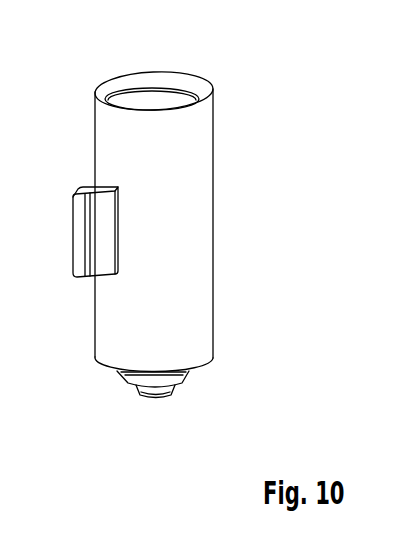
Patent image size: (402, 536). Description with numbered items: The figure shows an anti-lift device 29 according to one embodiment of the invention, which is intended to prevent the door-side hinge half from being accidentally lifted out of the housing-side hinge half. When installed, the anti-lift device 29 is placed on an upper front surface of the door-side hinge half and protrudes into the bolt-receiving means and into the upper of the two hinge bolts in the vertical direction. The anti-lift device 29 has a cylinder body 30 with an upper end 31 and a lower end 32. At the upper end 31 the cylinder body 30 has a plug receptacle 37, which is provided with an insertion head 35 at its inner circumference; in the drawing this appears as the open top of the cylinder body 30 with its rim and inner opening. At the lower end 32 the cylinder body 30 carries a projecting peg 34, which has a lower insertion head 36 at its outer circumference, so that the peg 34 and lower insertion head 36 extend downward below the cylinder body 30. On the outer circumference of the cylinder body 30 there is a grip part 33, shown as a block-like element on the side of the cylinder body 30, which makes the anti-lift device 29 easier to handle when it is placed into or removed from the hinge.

The anti-lift device 29 is at (161, 238).
The cylinder body 30 is at (179, 230).
The upper end 31 is at (137, 74).
The lower end 32 is at (163, 397).
The grip part 33 is at (72, 232).
The projecting peg 34 is at (158, 415).
The insertion head 35 is at (152, 70).
The lower insertion head 36 is at (150, 419).
The plug receptacle 37 is at (152, 65).